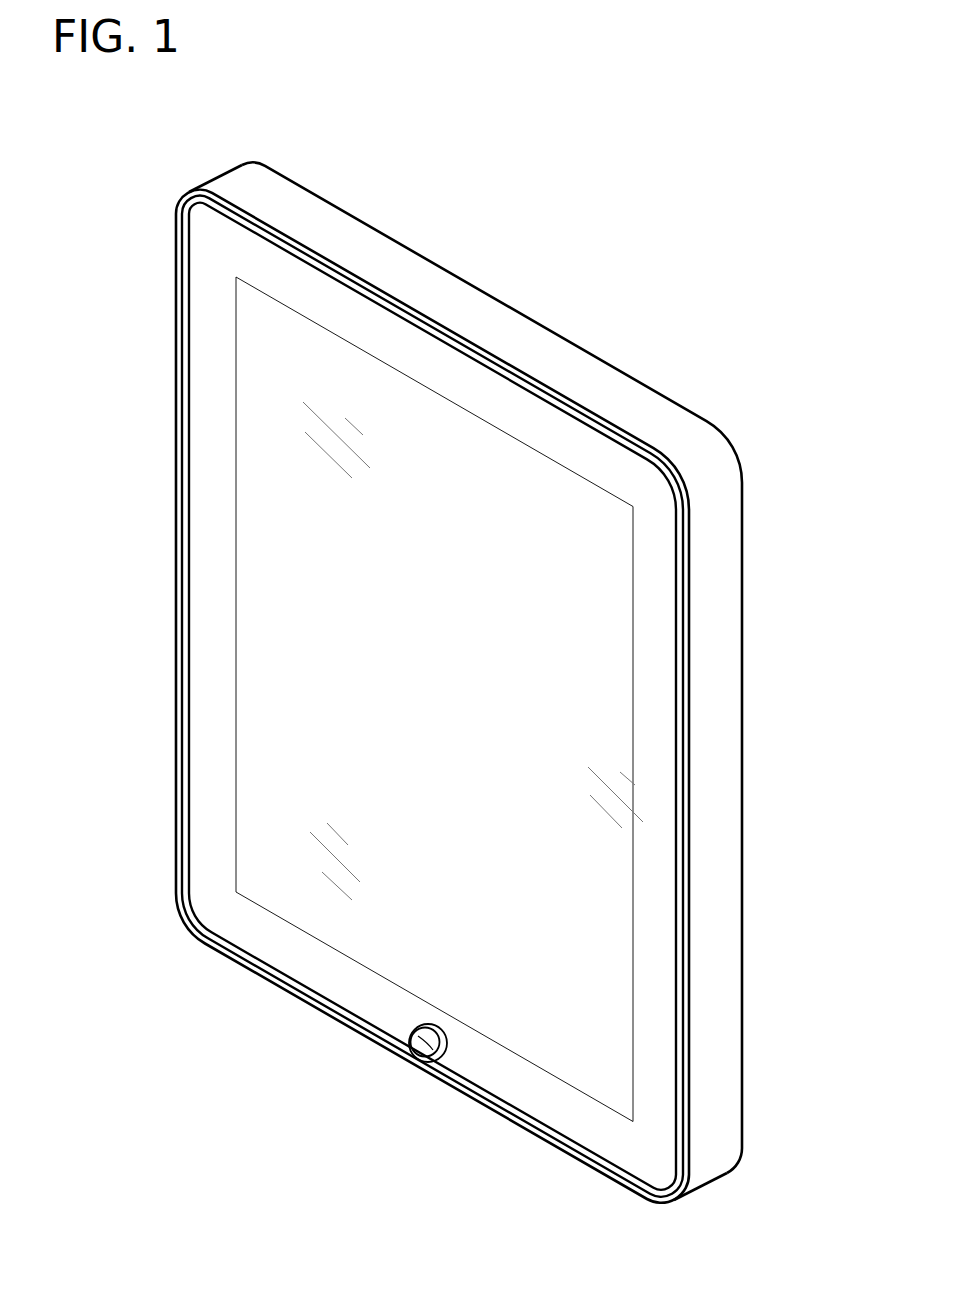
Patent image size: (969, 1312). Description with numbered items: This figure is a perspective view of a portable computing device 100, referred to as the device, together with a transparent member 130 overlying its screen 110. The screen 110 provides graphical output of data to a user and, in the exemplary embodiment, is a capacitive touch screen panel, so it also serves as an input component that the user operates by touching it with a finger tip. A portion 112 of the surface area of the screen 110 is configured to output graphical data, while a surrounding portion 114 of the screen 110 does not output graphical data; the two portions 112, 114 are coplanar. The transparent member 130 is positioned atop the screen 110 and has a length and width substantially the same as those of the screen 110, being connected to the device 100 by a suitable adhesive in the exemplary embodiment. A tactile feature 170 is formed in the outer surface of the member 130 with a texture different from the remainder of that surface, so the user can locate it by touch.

The portable computing device 100 is at (451, 670).
The screen 110 is at (365, 698).
The portion of the screen 112 is at (298, 553).
The surrounding portion of the screen 114 is at (657, 582).
The transparent member 130 is at (638, 437).
The tactile feature 170 is at (405, 1044).